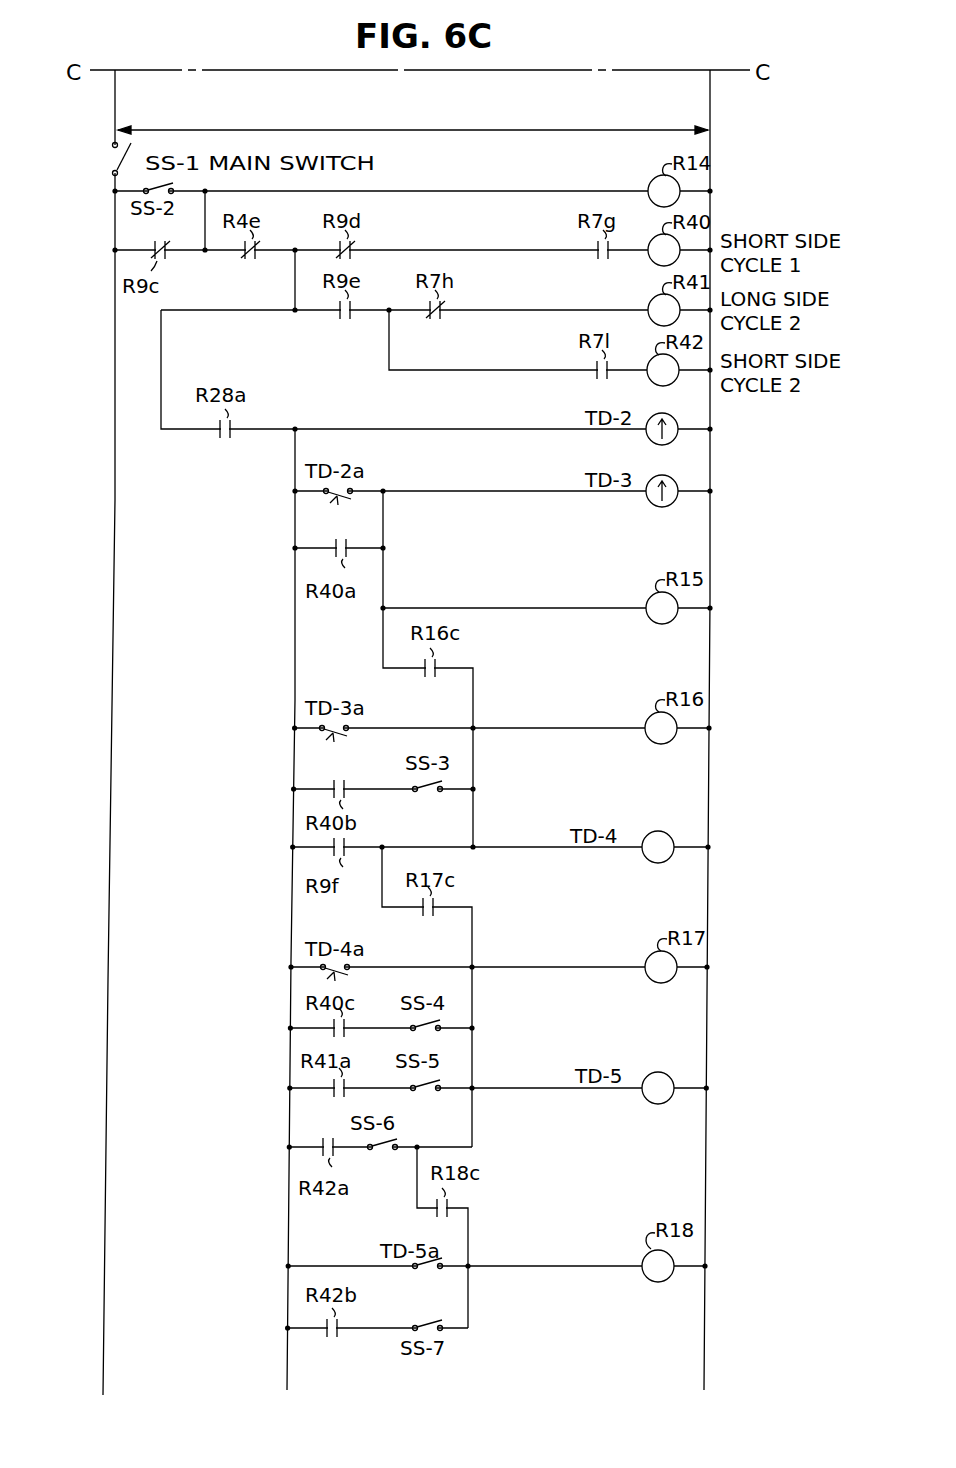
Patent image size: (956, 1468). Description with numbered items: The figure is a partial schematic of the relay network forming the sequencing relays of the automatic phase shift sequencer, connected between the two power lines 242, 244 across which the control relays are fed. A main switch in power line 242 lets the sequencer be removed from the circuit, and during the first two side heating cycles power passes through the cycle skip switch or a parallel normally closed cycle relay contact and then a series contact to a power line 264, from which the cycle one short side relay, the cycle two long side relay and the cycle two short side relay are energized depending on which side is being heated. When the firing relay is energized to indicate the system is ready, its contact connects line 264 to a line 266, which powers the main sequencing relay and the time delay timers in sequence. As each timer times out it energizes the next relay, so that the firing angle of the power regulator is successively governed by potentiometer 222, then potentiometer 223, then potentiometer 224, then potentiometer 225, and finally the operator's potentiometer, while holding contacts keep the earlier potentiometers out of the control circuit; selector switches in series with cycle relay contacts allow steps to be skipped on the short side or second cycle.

The power line 242 is at (115, 108).
The power line 244 is at (710, 108).
The power line 264 is at (295, 288).
The line 266 is at (295, 519).
The potentiometer 222 is at (720, 429).
The potentiometer 223 is at (720, 491).
The potentiometer 224 is at (718, 847).
The potentiometer 225 is at (718, 1088).